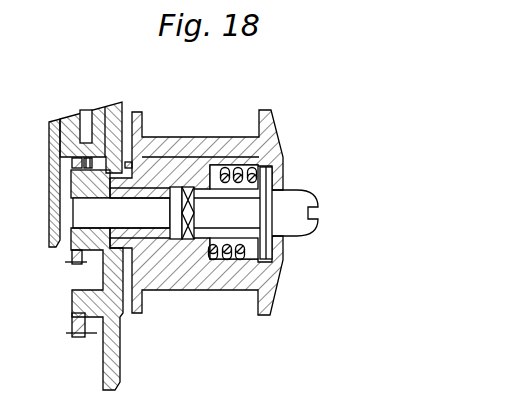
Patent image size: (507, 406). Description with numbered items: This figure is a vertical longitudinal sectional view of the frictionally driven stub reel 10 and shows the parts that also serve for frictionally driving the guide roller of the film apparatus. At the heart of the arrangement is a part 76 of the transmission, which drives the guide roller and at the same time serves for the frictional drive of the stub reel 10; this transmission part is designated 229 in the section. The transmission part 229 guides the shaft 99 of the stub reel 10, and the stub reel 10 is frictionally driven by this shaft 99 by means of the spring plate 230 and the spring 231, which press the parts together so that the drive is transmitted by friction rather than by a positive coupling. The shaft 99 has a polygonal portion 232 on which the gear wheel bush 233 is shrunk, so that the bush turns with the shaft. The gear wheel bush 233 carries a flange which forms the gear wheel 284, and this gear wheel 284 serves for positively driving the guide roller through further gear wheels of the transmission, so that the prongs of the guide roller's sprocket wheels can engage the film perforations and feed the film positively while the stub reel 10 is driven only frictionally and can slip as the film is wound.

The stub reel 10 is at (207, 277).
The part of the transmission 76 is at (70, 140).
The shaft 99 is at (85, 210).
The transmission part 229 is at (100, 250).
The spring plate 230 is at (263, 195).
The spring 231 is at (240, 256).
The polygonal portion 232 is at (190, 215).
The gear wheel bush 233 is at (167, 237).
The gear wheel 284 is at (127, 162).